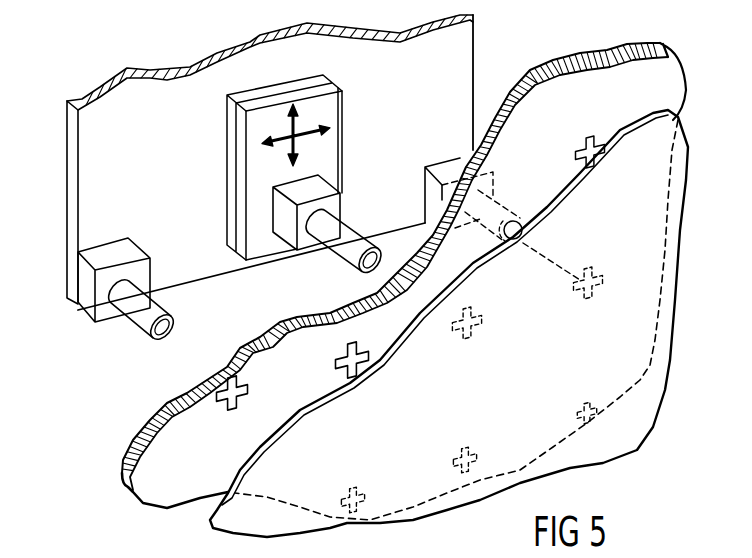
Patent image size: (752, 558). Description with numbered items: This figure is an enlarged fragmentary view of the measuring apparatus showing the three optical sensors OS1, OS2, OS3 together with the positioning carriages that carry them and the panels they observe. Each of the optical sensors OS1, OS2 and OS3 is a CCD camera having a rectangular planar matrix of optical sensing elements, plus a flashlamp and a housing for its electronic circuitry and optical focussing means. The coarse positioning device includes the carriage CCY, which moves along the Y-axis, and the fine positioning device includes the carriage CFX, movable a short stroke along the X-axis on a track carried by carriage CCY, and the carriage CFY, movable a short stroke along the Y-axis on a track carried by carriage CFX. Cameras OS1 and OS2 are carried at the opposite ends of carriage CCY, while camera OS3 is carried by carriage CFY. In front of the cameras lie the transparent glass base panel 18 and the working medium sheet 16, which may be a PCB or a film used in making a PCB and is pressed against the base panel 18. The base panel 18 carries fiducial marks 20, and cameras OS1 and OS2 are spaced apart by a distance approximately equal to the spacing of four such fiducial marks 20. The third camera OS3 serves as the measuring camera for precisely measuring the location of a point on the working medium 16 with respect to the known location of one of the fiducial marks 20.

The working medium sheet 16 is at (426, 425).
The transparent glass base panel 18 is at (308, 388).
The fiducial marks 20 is at (224, 406).
The carriage CCY is at (88, 170).
The carriage CFX is at (230, 170).
The carriage CFY is at (332, 163).
The optical sensor OS1 is at (140, 312).
The optical sensor OS2 is at (514, 219).
The optical sensor OS3 is at (349, 230).